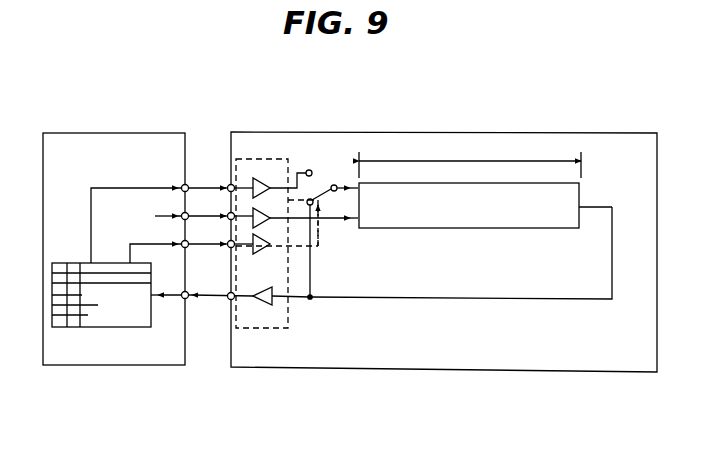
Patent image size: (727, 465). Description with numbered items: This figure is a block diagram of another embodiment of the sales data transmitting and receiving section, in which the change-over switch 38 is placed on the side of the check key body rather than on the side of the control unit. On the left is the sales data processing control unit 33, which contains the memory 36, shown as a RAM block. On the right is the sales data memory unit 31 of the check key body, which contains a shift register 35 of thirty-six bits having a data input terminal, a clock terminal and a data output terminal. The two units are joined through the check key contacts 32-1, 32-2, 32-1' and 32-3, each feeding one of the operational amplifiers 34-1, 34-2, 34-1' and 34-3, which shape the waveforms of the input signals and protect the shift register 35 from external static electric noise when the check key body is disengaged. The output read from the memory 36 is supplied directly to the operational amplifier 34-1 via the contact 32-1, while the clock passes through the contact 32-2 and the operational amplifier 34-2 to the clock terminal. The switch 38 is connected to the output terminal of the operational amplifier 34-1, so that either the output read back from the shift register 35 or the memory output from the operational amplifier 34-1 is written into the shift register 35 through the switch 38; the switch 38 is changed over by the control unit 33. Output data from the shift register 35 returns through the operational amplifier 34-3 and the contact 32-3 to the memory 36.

The sales data memory unit 31 is at (388, 132).
The sales data processing control unit 33 is at (148, 133).
The memory 36 is at (116, 327).
The check key contact 32-1 is at (172, 214).
The check key contact 32-2 is at (225, 214).
The second data line 32-1' is at (187, 242).
The check key contact 32-3 is at (231, 299).
The operational amplifier 34-1 is at (277, 233).
The operational amplifier 34-2 is at (262, 221).
The buffer 34-1' is at (313, 264).
The operational amplifier 34-3 is at (263, 306).
The change-over switch 38 is at (323, 186).
The shift register 35 is at (505, 228).